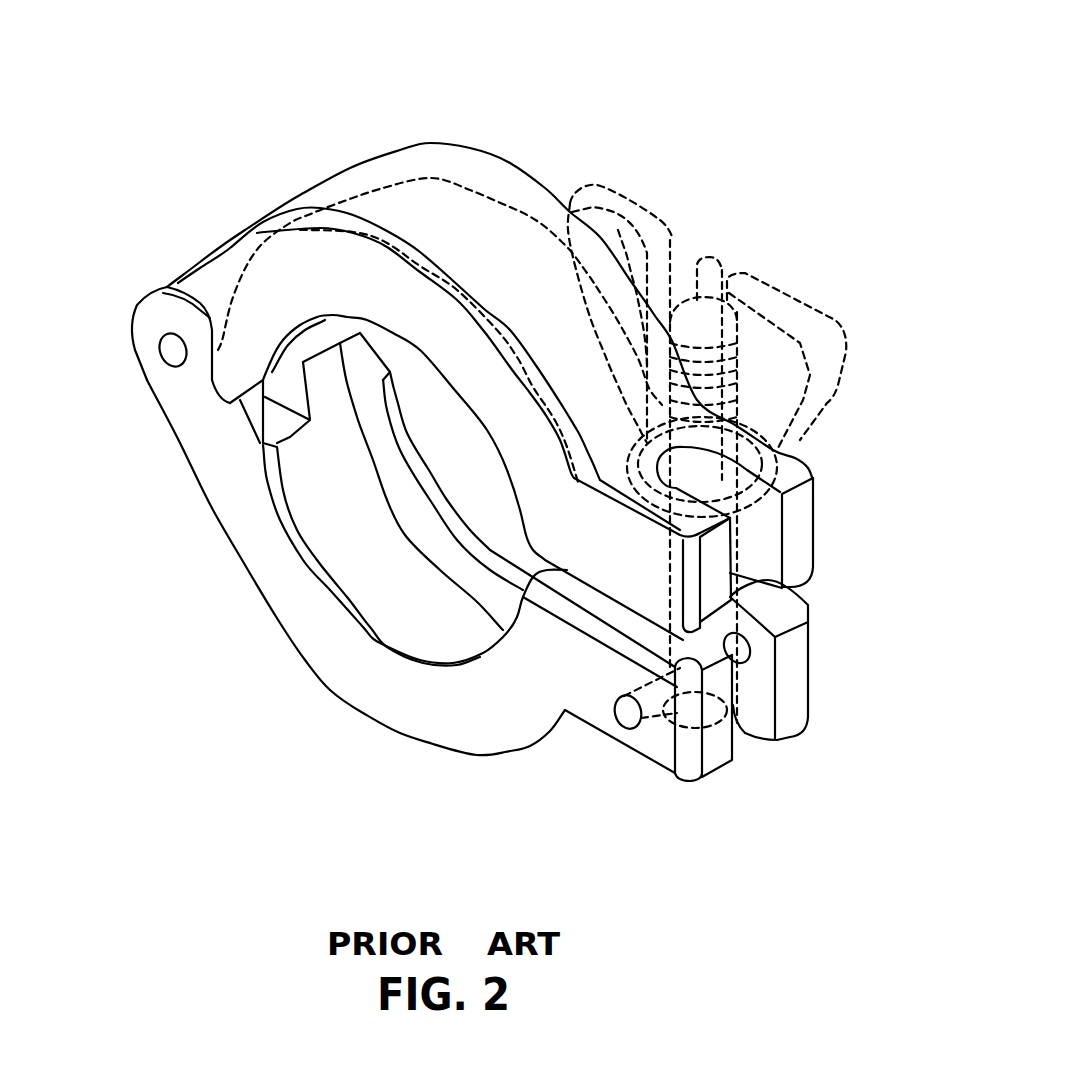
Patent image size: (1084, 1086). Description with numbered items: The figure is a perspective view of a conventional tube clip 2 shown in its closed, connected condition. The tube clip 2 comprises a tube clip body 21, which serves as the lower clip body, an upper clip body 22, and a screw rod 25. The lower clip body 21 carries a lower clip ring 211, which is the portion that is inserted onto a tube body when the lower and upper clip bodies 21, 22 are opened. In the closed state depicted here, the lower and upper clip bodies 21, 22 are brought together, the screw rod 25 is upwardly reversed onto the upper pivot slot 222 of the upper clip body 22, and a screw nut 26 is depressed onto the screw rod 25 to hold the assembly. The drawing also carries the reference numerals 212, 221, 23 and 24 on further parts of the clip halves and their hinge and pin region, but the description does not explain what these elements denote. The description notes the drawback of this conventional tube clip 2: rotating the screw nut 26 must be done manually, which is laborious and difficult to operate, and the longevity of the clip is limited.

The tube clip 2 is at (537, 183).
The tube clip body 21 is at (333, 667).
The lower clip ring 211 is at (377, 547).
The lug of lower clamp half 212 is at (757, 713).
The upper clip body 22 is at (378, 152).
The groove of upper clamp half 221 is at (445, 148).
The upper pivot slot 222 is at (774, 558).
The pivot hole 23 is at (175, 352).
The pin 24 is at (618, 718).
The screw rod 25 is at (697, 290).
The screw nut 26 is at (840, 332).